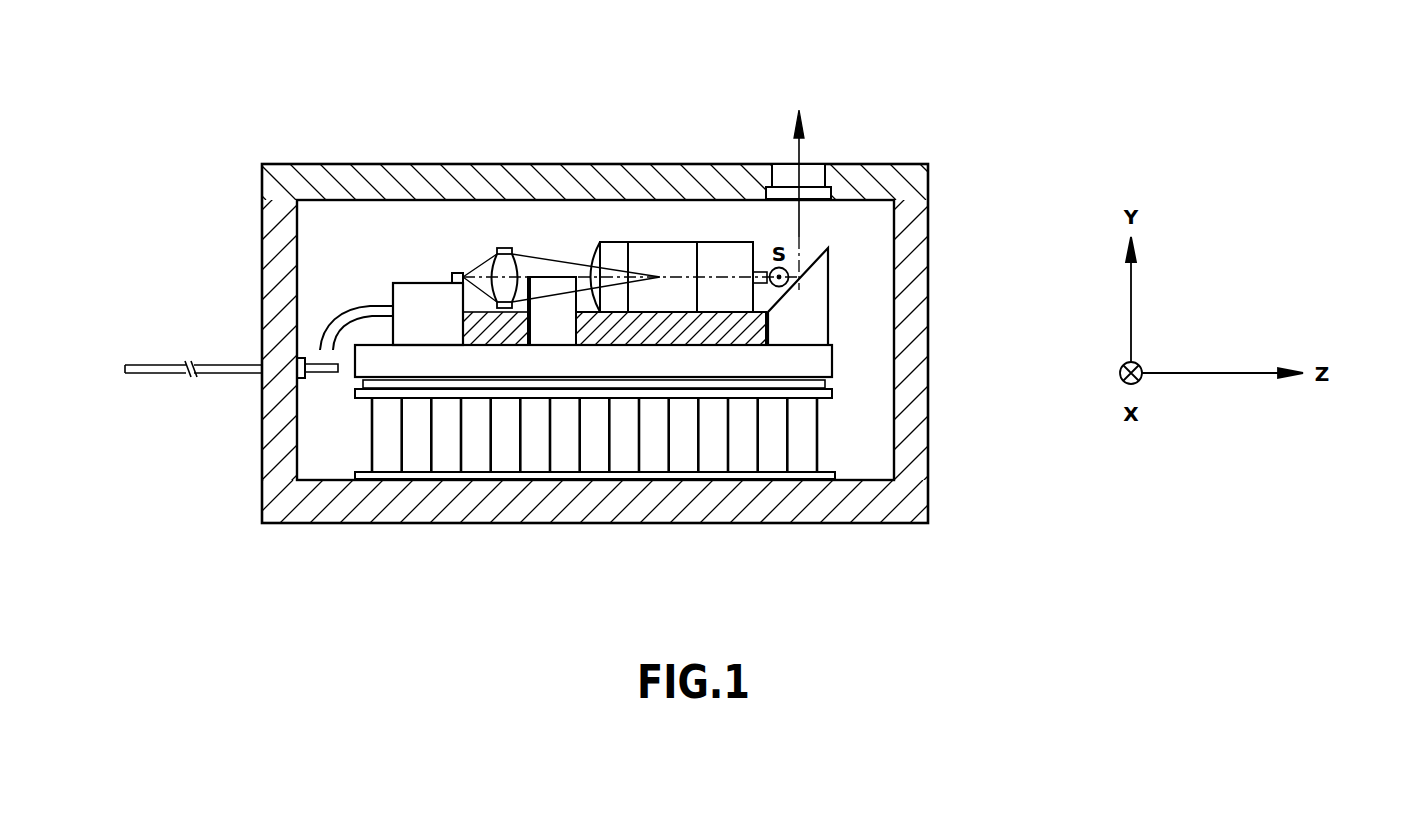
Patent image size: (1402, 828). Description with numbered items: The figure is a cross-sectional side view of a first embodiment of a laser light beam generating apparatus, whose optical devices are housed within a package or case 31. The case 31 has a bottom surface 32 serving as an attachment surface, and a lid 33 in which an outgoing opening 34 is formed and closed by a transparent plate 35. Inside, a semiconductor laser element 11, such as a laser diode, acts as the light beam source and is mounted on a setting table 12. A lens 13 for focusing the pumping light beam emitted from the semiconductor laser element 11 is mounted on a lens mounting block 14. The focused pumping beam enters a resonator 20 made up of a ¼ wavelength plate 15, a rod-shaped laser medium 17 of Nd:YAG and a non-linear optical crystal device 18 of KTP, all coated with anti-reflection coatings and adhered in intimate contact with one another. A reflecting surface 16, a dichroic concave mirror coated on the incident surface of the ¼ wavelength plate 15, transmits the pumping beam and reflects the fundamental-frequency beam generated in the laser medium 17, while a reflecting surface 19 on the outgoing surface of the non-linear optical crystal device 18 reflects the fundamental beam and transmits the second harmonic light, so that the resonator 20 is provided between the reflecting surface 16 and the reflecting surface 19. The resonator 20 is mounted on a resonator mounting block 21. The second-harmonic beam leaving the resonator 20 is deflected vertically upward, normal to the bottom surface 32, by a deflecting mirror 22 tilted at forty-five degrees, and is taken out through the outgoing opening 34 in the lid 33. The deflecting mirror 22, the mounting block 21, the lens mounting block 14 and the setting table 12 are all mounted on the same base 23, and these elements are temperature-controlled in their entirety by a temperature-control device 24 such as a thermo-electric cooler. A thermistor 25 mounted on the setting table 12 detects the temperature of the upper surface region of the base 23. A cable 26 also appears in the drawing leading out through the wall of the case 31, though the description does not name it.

The semiconductor laser element 11 is at (457, 272).
The setting table 12 is at (417, 293).
The lens 13 is at (505, 247).
The lens mounting block 14 is at (525, 333).
The ¼ wavelength plate 15 is at (619, 250).
The reflecting surface 16 is at (583, 240).
The laser medium 17 is at (660, 250).
The non-linear optical crystal device 18 is at (723, 250).
The reflecting surface 19 is at (762, 192).
The resonator 20 is at (679, 175).
The resonator mounting block 21 is at (763, 332).
The deflecting mirror 22 is at (808, 290).
The base 23 is at (810, 362).
The temperature-control device 24 is at (803, 438).
The thermistor 25 is at (375, 313).
The cable 26 is at (221, 367).
The package or case 31 is at (940, 473).
The bottom surface 32 is at (662, 525).
The lid 33 is at (907, 172).
The outgoing opening 34 is at (815, 178).
The transparent plate 35 is at (818, 205).